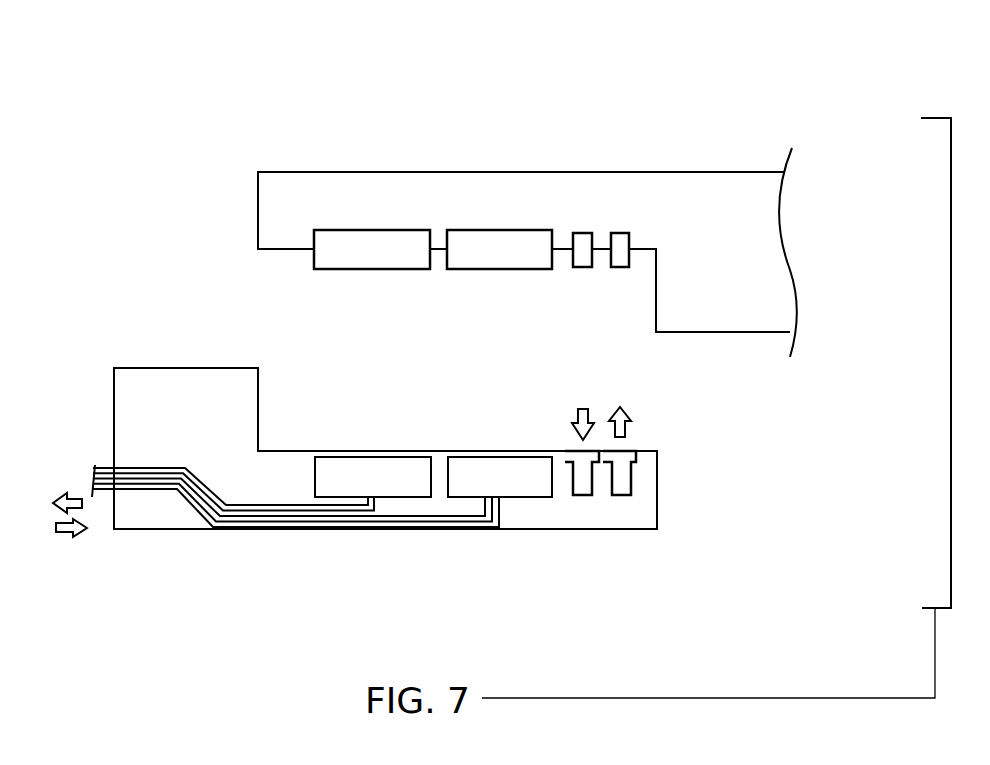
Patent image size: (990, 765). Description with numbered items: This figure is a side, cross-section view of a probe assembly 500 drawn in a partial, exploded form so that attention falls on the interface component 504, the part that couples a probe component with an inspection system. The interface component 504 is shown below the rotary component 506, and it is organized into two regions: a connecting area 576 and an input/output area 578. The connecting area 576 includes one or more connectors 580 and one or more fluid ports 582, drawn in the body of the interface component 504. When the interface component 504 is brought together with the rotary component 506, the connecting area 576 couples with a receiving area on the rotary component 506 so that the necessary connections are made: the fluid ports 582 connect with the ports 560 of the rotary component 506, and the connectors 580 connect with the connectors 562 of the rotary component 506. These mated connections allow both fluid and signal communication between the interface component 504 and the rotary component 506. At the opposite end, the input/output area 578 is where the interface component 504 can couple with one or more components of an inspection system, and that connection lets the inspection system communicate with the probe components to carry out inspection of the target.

The probe assembly 500 is at (803, 66).
The interface component 504 is at (395, 511).
The rotary component 506 is at (527, 230).
The ports 560 is at (582, 268).
The connectors 562 is at (373, 270).
The connecting area 576 is at (650, 484).
The input/output area 578 is at (82, 457).
The connectors 580 is at (398, 475).
The fluid ports 582 is at (585, 483).